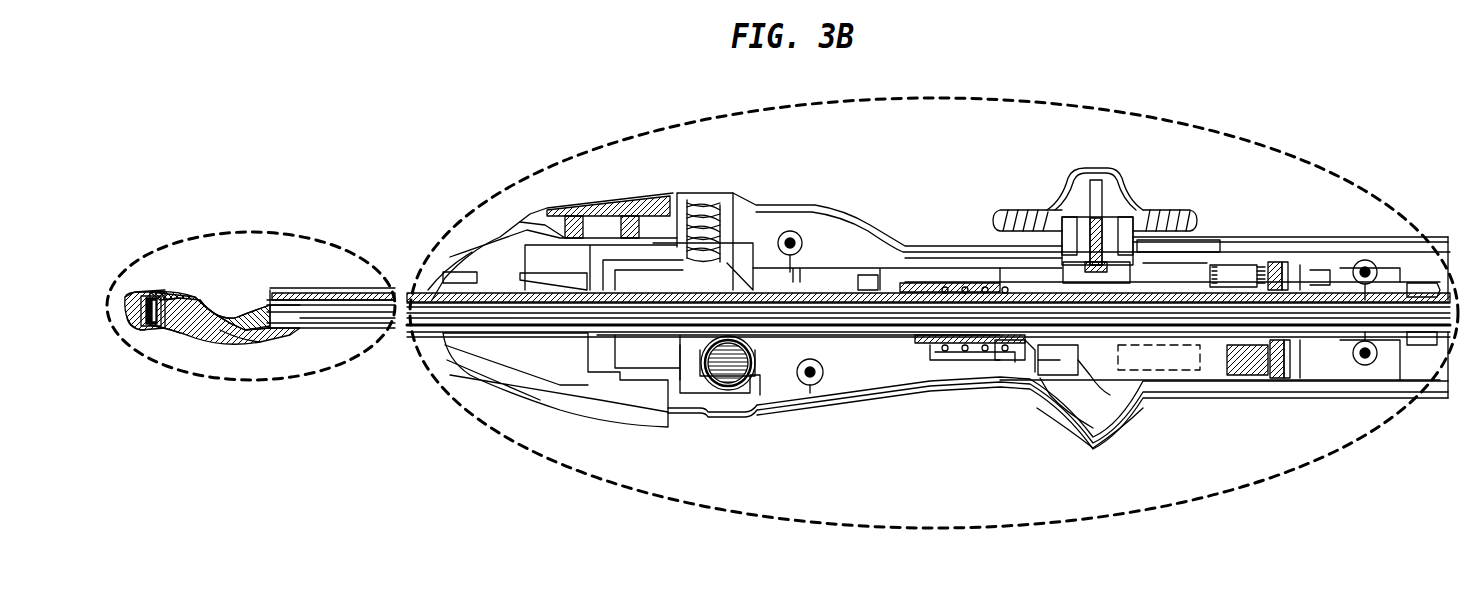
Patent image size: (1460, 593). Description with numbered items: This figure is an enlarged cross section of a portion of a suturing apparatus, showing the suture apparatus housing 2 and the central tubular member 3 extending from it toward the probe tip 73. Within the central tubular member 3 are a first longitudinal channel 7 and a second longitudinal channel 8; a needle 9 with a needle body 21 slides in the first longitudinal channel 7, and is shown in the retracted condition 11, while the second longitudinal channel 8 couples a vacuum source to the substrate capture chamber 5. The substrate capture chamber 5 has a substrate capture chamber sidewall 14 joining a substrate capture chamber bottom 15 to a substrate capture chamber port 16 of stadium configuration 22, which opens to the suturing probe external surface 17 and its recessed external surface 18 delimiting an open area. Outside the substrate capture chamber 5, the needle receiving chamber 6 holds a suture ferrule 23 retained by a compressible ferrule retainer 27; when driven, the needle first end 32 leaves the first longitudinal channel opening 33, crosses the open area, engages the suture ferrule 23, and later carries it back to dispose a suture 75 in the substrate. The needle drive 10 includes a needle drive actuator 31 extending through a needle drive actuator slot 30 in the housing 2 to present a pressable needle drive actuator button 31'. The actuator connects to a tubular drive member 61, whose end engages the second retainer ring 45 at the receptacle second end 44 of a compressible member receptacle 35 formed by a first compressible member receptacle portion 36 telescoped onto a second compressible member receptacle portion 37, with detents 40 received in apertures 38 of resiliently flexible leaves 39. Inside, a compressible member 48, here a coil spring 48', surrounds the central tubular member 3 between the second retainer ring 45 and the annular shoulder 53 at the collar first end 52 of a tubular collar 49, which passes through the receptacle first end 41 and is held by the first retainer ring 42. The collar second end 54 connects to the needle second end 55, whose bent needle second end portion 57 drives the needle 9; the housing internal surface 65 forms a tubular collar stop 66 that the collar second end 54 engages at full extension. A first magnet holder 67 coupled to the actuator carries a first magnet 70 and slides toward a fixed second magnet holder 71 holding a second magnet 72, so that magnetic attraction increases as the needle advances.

The suture apparatus housing 2 is at (1278, 216).
The central tubular member 3 is at (349, 338).
The substrate capture chamber 5 is at (220, 340).
The needle receiving chamber 6 is at (153, 272).
The first longitudinal channel 7 is at (856, 288).
The second longitudinal channel 8 is at (1409, 342).
The needle 9 is at (331, 253).
The needle drive 10 is at (928, 156).
The retracted condition 11 is at (360, 300).
The substrate capture chamber sidewall 14 is at (249, 345).
The substrate capture chamber bottom 15 is at (237, 345).
The substrate capture chamber port 16 is at (235, 229).
The suturing probe external surface 17 is at (174, 340).
The recessed external surface 18 is at (188, 305).
The needle body 21 is at (423, 305).
The stadium configuration 22 is at (227, 328).
The suture ferrule 23 is at (138, 300).
The compressible ferrule retainer 27 is at (158, 338).
The needle drive actuator slot 30 is at (962, 226).
The needle drive actuator 31 is at (1249, 189).
The pressable needle drive actuator button 31' is at (1095, 170).
The needle first end 32 is at (296, 290).
The first longitudinal channel opening 33 is at (1384, 288).
The compressible member receptacle 35 is at (1005, 360).
The first compressible member receptacle portion 36 is at (931, 362).
The second compressible member receptacle portion 37 is at (1014, 365).
The aperture 38 is at (940, 362).
The resiliently flexible leaf 39 is at (986, 362).
The detent 40 is at (970, 362).
The receptacle first end 41 is at (928, 389).
The first retainer ring 42 is at (922, 345).
The receptacle second end 44 is at (1056, 416).
The second retainer ring 45 is at (1030, 375).
The compressible member 48 is at (970, 166).
The coil spring 48' is at (970, 166).
The tubular collar 49 is at (870, 340).
The collar first end 52 is at (939, 175).
The annular shoulder 53 is at (930, 282).
The collar second end 54 is at (846, 282).
The needle second end 55 is at (722, 212).
The needle second end portion 57 is at (876, 262).
The tubular drive member 61 is at (1108, 372).
The housing internal surface 65 is at (1325, 255).
The tubular collar stop 66 is at (737, 186).
The first magnet holder 67 is at (1247, 382).
The first magnet 70 is at (1265, 365).
The second magnet holder 71 is at (1062, 378).
The second magnet 72 is at (1070, 365).
The probe tip 73 is at (135, 330).
The suture 75 is at (128, 298).